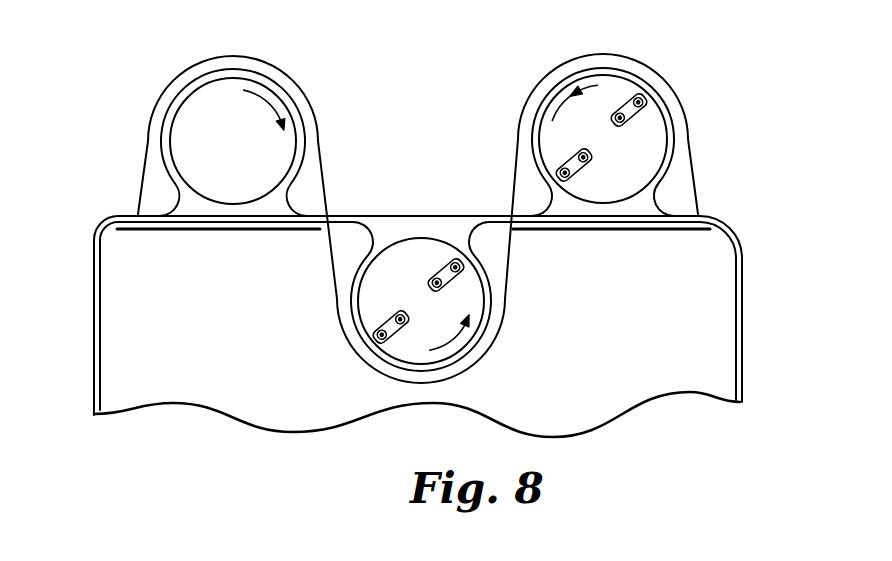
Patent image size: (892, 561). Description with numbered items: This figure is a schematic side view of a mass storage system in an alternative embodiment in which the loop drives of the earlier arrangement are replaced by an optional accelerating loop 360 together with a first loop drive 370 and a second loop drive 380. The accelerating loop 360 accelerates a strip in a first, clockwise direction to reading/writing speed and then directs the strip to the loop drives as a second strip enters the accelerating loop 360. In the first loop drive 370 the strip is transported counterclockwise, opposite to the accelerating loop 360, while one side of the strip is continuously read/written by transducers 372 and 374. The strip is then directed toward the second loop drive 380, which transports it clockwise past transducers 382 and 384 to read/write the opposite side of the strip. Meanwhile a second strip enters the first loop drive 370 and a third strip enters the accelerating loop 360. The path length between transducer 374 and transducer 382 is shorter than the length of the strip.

The accelerating loop 360 is at (258, 63).
The first loop drive 370 is at (494, 346).
The second loop drive 380 is at (647, 57).
The transducer 372 is at (381, 335).
The transducer 374 is at (456, 278).
The transducer 382 is at (563, 170).
The transducer 384 is at (636, 115).